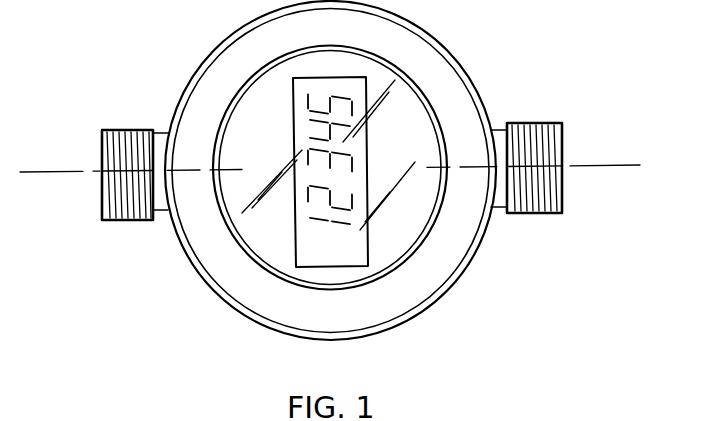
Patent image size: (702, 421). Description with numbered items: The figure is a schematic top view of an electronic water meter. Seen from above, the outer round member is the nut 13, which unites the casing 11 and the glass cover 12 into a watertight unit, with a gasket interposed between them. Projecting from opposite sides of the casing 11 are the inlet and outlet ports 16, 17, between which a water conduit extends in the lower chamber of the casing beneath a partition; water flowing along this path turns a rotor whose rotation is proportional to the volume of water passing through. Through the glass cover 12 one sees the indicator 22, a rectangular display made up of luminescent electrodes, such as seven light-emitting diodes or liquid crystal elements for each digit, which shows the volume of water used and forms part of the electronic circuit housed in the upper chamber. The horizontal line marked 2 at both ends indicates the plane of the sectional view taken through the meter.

The section line 2- 2 is at (30, 174).
The casing 11 is at (501, 121).
The glass cover 12 is at (263, 153).
The nut 13 is at (427, 308).
The inlet port 16 is at (102, 210).
The outlet port 17 is at (562, 195).
The indicator 22 is at (367, 156).